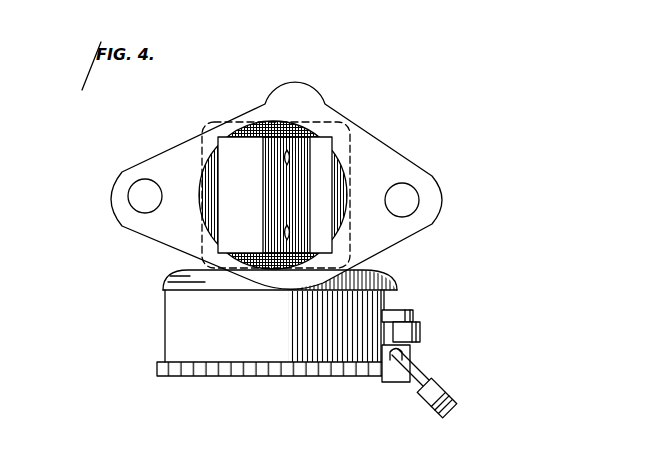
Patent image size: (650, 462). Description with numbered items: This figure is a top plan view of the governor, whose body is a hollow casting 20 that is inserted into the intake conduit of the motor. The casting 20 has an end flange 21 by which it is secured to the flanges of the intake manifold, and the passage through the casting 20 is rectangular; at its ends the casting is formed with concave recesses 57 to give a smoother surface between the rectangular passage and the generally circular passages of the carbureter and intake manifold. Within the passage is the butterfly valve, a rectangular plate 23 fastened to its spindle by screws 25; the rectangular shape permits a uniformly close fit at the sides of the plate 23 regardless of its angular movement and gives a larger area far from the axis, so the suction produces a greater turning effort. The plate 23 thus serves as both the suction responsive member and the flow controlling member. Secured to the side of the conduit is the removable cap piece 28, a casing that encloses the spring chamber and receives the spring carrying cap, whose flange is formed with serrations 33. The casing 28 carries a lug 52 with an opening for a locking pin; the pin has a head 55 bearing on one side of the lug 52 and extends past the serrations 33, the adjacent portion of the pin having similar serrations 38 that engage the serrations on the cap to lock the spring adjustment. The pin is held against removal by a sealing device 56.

The hollow casting 20 is at (352, 148).
The end flange 21 is at (168, 223).
The plate 23 is at (273, 178).
The screws 25 is at (289, 158).
The cap piece 28 is at (177, 312).
The serrations 33 is at (290, 377).
The serrations 38 is at (390, 357).
The lug 52 is at (420, 328).
The head 55 is at (408, 312).
The sealing device 56 is at (433, 387).
The concave recesses 57 is at (255, 130).